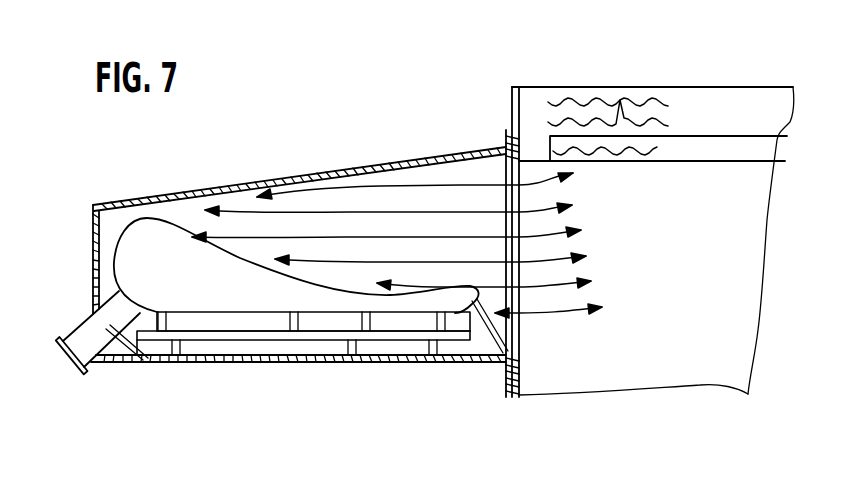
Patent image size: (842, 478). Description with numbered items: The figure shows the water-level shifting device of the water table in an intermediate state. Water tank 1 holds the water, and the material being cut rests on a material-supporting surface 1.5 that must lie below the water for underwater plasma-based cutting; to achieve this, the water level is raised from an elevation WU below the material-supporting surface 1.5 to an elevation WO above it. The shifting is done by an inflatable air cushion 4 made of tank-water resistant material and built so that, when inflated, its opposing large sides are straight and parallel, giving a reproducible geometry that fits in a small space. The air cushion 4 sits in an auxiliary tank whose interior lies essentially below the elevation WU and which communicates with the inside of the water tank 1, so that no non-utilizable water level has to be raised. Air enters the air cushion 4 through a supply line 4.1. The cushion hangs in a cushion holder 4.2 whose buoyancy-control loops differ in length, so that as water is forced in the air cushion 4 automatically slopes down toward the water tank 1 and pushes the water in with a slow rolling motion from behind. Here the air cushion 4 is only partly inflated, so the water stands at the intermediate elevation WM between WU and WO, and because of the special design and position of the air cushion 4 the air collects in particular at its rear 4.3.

The water tank 1 is at (653, 214).
The material-supporting surface 1.5 is at (752, 153).
The air cushion 4 is at (322, 303).
The supply line 4.1 is at (95, 330).
The cushion holder 4.2 is at (250, 334).
The rear of air cushion 4.3 is at (140, 237).
The highest water elevation WO is at (610, 93).
The intermediate water elevation WM is at (683, 119).
The lower water elevation WU is at (602, 162).